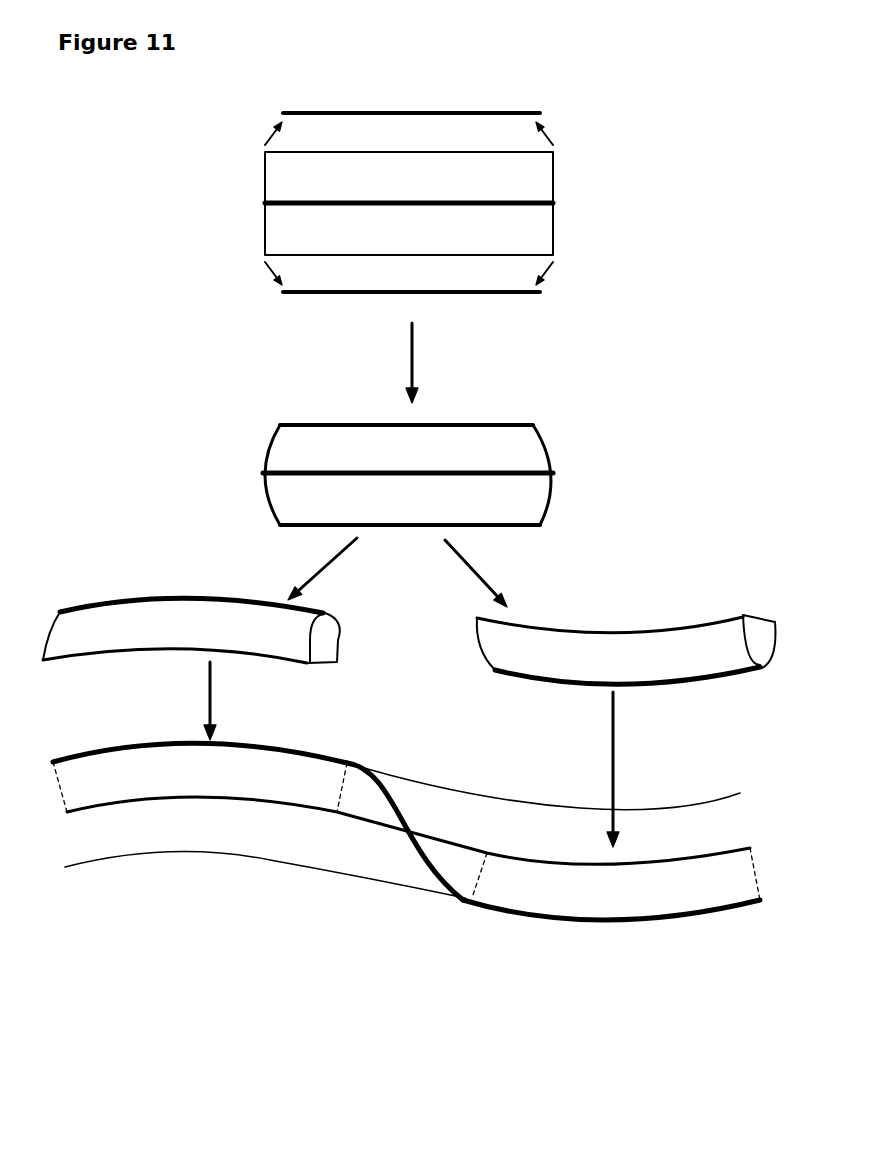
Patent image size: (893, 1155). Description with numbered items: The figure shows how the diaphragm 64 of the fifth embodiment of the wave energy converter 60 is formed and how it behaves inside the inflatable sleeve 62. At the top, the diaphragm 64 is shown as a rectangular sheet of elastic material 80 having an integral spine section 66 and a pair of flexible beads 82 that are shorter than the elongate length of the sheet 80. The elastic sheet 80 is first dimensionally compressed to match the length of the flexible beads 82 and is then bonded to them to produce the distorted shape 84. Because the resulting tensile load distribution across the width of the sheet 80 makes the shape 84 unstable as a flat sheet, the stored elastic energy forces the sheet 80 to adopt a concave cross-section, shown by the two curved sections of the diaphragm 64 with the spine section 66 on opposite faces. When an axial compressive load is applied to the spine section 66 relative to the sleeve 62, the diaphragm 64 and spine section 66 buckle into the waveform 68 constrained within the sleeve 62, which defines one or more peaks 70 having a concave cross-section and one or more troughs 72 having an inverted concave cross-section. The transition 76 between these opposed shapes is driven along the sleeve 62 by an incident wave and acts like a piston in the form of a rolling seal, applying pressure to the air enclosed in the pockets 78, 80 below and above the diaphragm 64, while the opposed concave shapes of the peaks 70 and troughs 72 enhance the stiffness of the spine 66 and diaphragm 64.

The wave energy converter 60 is at (228, 905).
The inflatable sleeve 62 is at (108, 862).
The diaphragm 64 is at (578, 174).
The spine section 66 is at (548, 207).
The waveform 68 is at (453, 819).
The peak 70 is at (138, 731).
The trough 72 is at (617, 933).
The transition 76 is at (407, 833).
The air pocket below the diaphragm 78 is at (200, 838).
The rectangular sheet of elastic material 80 is at (278, 231).
The flexible beads 82 is at (442, 113).
The distorted shape 84 is at (581, 409).